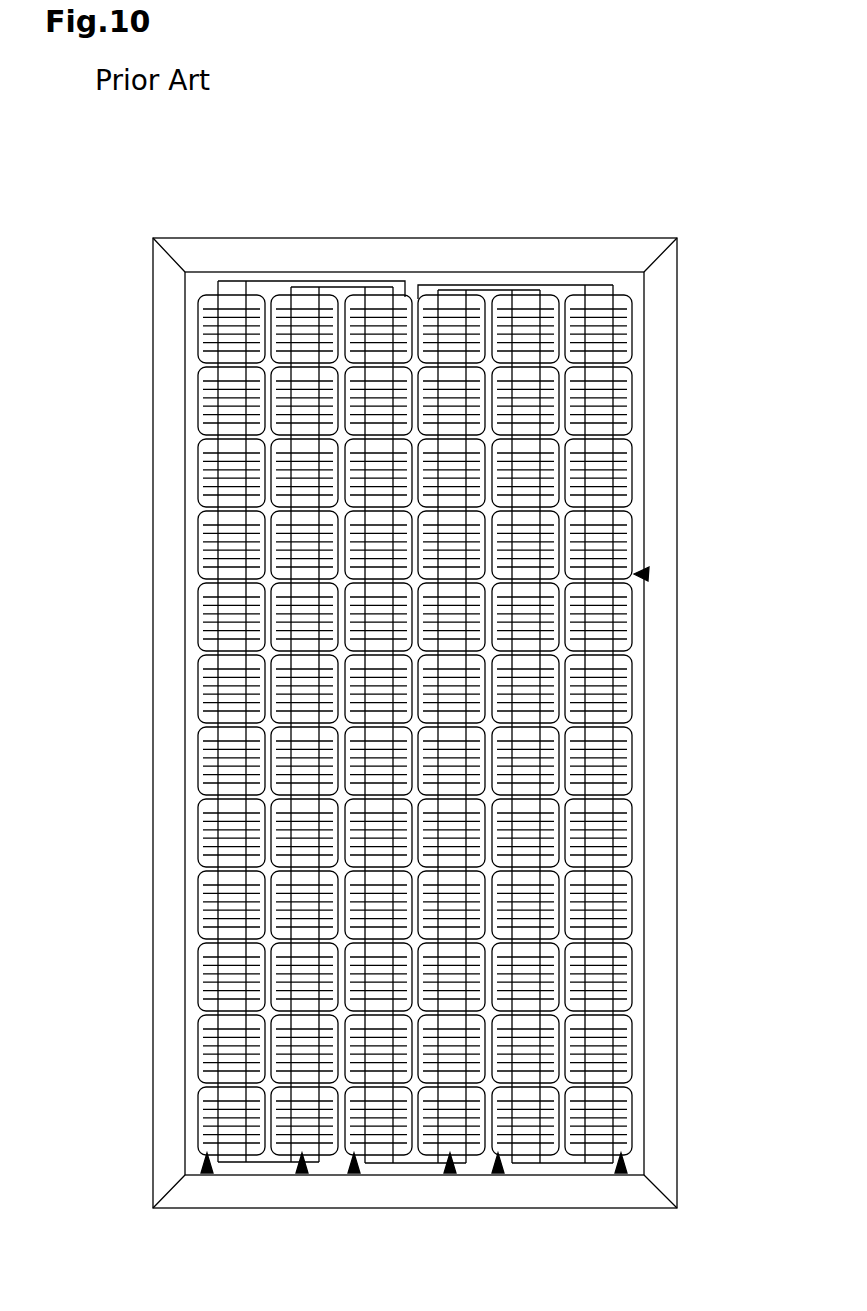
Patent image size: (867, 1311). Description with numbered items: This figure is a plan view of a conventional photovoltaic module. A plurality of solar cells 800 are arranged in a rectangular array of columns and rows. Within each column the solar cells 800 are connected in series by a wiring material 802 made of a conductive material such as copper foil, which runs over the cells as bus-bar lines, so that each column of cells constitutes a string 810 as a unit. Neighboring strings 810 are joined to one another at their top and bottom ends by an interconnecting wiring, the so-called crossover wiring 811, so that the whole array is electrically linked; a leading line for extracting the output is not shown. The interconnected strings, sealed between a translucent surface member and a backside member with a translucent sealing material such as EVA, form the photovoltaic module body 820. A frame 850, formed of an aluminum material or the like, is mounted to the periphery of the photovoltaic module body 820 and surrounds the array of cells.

The solar cell 800 is at (305, 318).
The wiring material 802 is at (603, 320).
The string 810 is at (207, 1173).
The crossover wiring 811 is at (262, 281).
The photovoltaic module body 820 is at (646, 572).
The frame 850 is at (662, 905).